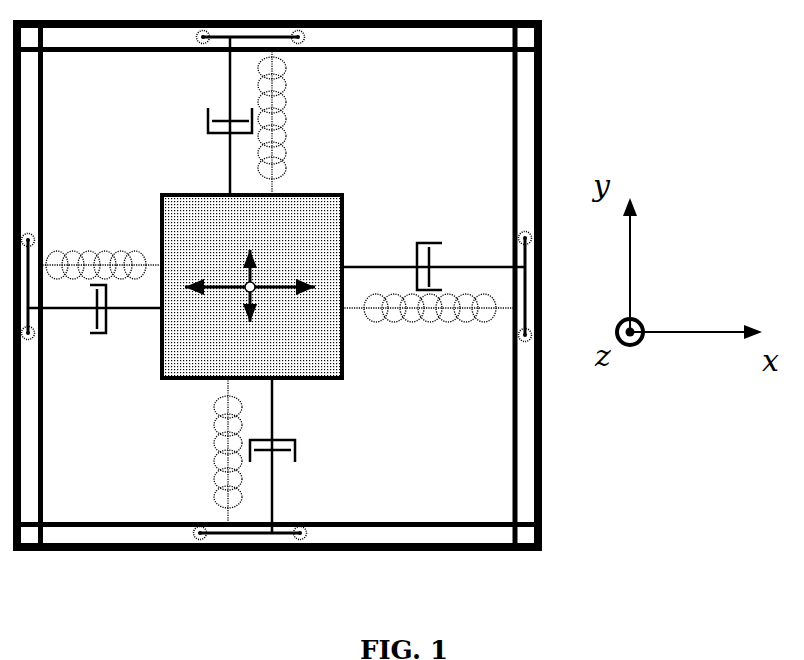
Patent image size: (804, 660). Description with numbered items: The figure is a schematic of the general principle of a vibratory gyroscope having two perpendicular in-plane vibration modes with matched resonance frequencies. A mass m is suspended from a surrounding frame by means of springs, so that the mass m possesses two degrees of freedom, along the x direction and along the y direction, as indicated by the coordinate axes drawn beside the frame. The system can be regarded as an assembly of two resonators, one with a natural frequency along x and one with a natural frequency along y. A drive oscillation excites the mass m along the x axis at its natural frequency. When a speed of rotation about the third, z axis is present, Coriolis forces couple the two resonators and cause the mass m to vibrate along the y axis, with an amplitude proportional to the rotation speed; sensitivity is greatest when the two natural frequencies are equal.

The mass m is at (252, 286).